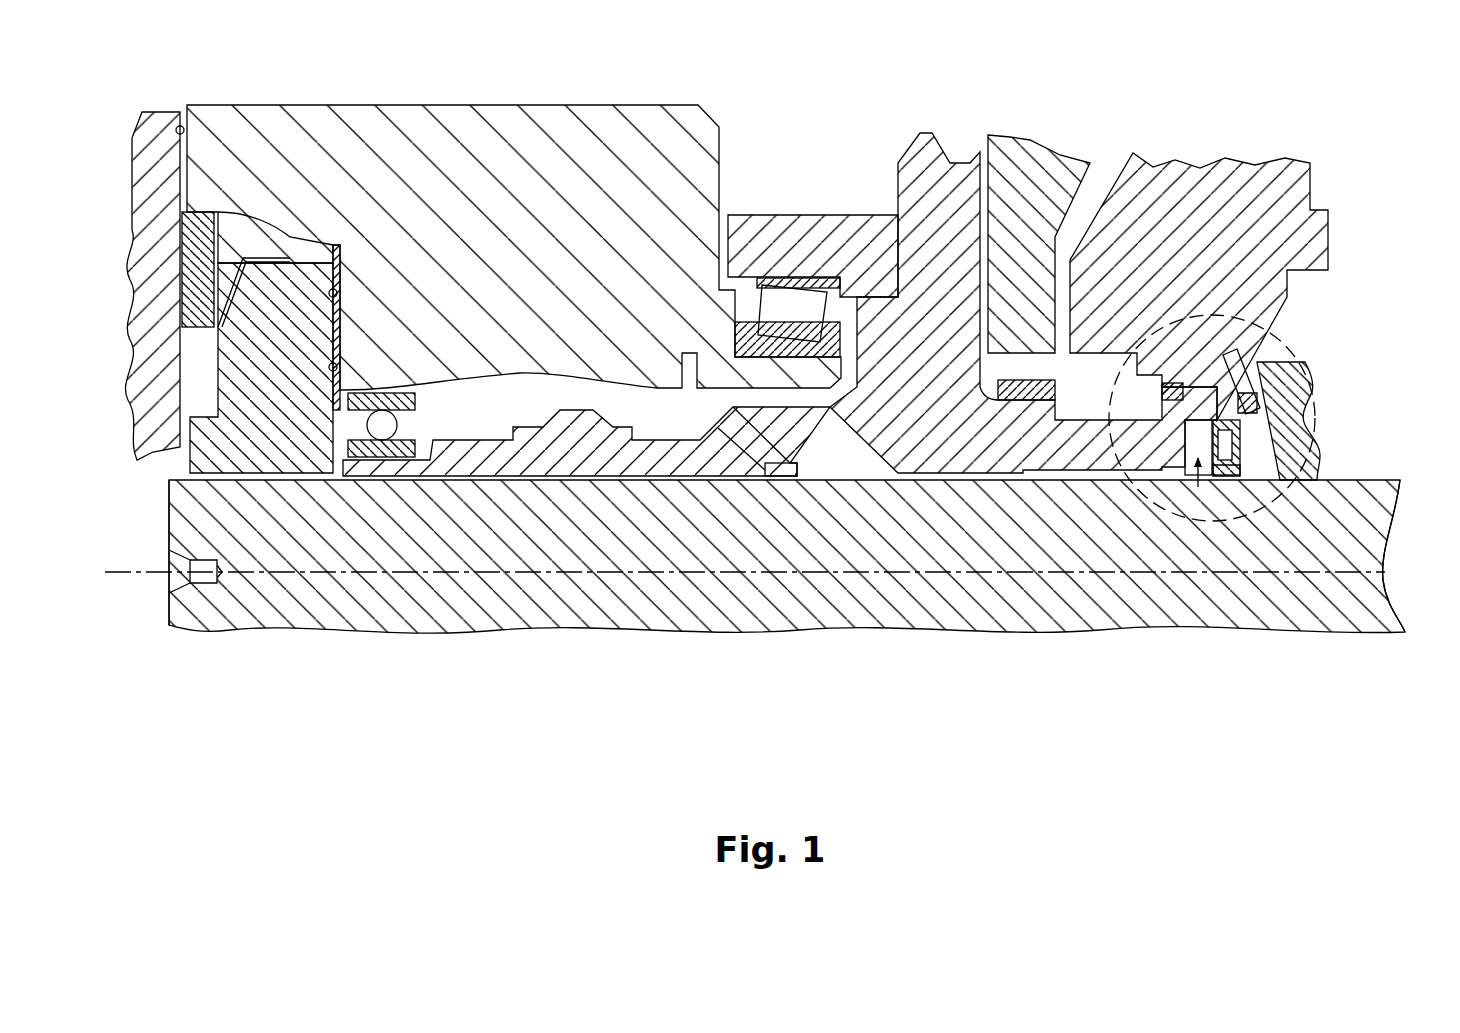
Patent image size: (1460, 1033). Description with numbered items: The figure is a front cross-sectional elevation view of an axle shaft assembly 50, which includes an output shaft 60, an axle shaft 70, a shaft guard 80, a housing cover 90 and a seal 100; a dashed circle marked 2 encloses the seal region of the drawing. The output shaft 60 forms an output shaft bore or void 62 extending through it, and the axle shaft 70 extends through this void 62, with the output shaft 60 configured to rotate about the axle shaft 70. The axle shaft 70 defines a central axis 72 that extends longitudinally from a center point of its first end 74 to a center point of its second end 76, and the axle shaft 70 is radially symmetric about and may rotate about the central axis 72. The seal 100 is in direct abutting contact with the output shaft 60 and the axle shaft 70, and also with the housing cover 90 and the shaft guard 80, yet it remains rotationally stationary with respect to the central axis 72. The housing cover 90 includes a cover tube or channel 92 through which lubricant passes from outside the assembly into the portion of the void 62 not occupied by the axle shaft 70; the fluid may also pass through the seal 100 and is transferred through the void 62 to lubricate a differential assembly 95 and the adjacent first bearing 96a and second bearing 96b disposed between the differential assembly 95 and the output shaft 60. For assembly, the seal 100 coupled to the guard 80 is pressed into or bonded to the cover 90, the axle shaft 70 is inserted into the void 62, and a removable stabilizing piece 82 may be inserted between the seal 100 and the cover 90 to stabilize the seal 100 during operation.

The axle shaft assembly 50 is at (1030, 692).
The output shaft 60 is at (920, 415).
The output shaft bore or void 62 is at (905, 481).
The axle shaft 70 is at (520, 600).
The central axis 72 is at (762, 578).
The first end 74 is at (169, 510).
The second end 76 is at (1403, 522).
The shaft guard 80 is at (1248, 458).
The removable stabilizing piece 82 is at (1232, 478).
The housing cover 90 is at (1280, 185).
The cover tube or channel 92 is at (1238, 380).
The differential assembly 95 is at (426, 186).
The first bearing 96a is at (797, 303).
The second bearing 96b is at (372, 432).
The seal 100 is at (1198, 490).
The detail region of FIG. 2 is at (1272, 338).